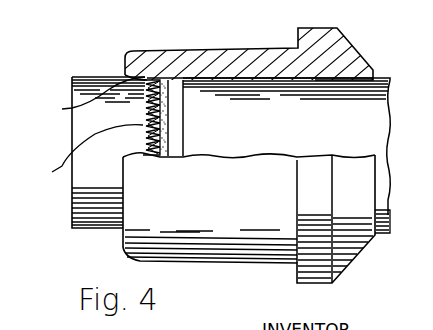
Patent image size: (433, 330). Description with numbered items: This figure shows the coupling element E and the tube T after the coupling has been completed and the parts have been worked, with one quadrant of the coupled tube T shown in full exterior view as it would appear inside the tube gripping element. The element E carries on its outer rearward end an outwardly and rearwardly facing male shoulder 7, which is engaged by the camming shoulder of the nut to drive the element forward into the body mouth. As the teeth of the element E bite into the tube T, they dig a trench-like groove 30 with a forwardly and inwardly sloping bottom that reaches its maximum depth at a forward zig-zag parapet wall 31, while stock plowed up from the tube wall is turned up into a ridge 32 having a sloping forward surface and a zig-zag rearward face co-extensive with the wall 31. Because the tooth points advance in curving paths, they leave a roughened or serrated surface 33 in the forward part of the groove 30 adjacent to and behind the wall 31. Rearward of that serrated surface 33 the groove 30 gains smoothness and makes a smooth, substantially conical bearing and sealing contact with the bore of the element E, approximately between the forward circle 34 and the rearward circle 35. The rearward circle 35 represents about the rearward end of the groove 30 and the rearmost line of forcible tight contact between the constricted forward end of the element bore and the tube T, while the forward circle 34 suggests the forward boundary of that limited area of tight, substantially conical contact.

The coupling element E is at (249, 47).
The tube T is at (286, 155).
The male shoulder 7 is at (352, 262).
The trench-like groove 30 is at (184, 126).
The zig-zag parapet wall 31 is at (87, 152).
The ridge 32 is at (89, 98).
The roughened or serrated surface 33 is at (163, 137).
The forward circle 34 is at (166, 99).
The rearward circle 35 is at (184, 118).